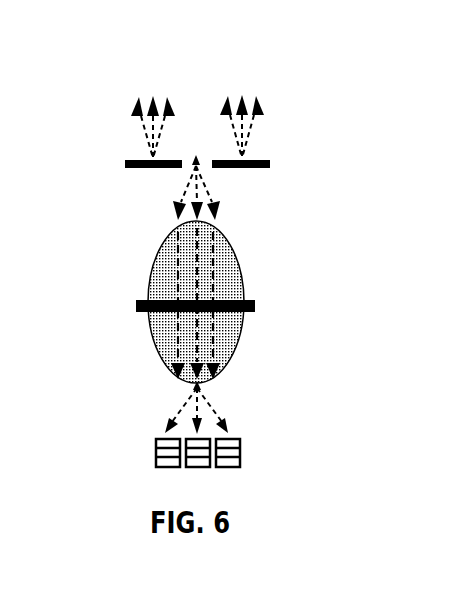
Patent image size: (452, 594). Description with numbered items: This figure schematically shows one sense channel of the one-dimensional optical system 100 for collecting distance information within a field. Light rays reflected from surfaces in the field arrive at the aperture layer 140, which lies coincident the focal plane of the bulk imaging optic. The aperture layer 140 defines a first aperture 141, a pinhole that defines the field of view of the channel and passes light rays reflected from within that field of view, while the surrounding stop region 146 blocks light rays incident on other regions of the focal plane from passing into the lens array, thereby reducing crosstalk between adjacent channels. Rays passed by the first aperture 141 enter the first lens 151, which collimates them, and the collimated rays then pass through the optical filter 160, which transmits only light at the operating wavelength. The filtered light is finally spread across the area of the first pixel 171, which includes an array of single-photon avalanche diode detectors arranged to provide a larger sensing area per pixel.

The one-dimensional optical system 100 is at (74, 54).
The aperture layer 140 is at (125, 162).
The first aperture 141 is at (206, 143).
The stop region 146 is at (272, 152).
The first lens 151 is at (163, 263).
The optical filter 160 is at (137, 304).
The first pixel 171 is at (155, 450).